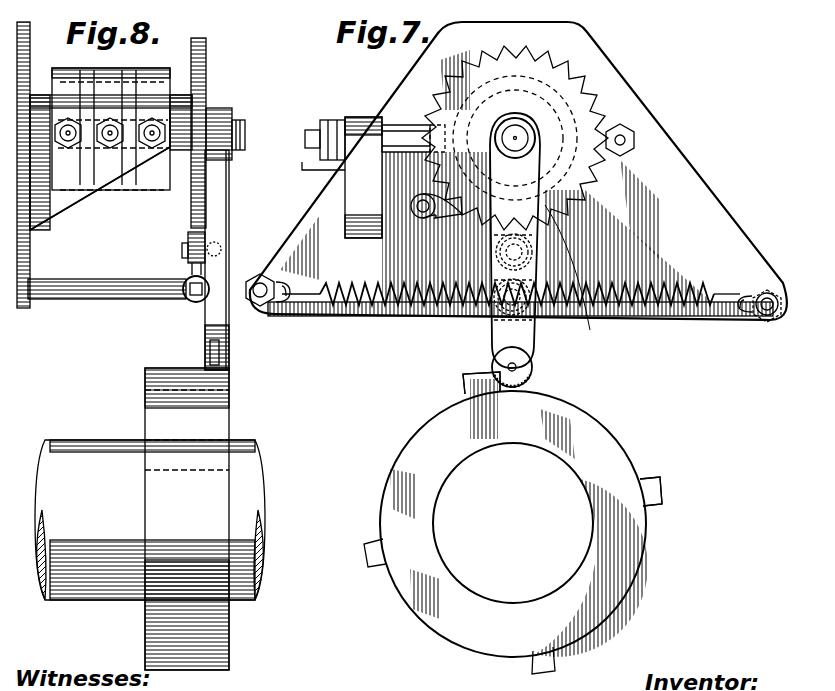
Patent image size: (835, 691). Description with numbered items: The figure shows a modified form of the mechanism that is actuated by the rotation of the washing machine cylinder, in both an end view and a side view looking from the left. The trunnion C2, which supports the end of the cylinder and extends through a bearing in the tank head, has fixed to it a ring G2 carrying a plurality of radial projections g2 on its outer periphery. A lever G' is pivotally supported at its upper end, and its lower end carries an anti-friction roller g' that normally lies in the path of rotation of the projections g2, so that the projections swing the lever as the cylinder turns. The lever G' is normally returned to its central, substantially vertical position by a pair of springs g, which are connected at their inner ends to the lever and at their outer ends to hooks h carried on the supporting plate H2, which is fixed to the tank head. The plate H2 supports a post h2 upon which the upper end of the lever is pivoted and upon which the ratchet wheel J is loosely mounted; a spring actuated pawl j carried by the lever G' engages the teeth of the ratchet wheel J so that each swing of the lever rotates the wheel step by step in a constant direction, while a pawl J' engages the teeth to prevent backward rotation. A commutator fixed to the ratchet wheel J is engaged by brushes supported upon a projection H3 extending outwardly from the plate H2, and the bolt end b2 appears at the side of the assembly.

In FIG. 8, the ratchet wheel J is at (213, 130).
In FIG. 7, the ratchet wheel J is at (542, 138).
In FIG. 7, the post h2 is at (520, 135).
In FIG. 8, the supporting plate H2 is at (30, 265).
In FIG. 7, the supporting plate H2 is at (700, 218).
In FIG. 8, the projection H3 is at (75, 200).
In FIG. 8, the bolt end b2 is at (245, 125).
In FIG. 7, the lever G' is at (536, 240).
In FIG. 7, the anti-friction roller g' is at (547, 367).
In FIG. 7, the springs g is at (511, 314).
In FIG. 7, the hooks h is at (275, 312).
In FIG. 7, the pawl J' is at (436, 271).
In FIG. 7, the spring actuated pawl j is at (574, 277).
In FIG. 8, the ring G2 is at (230, 415).
In FIG. 7, the ring G2 is at (618, 459).
In FIG. 7, the radial projections g2 is at (473, 382).
In FIG. 8, the trunnion C2 is at (75, 455).
In FIG. 7, the trunnion C2 is at (558, 560).